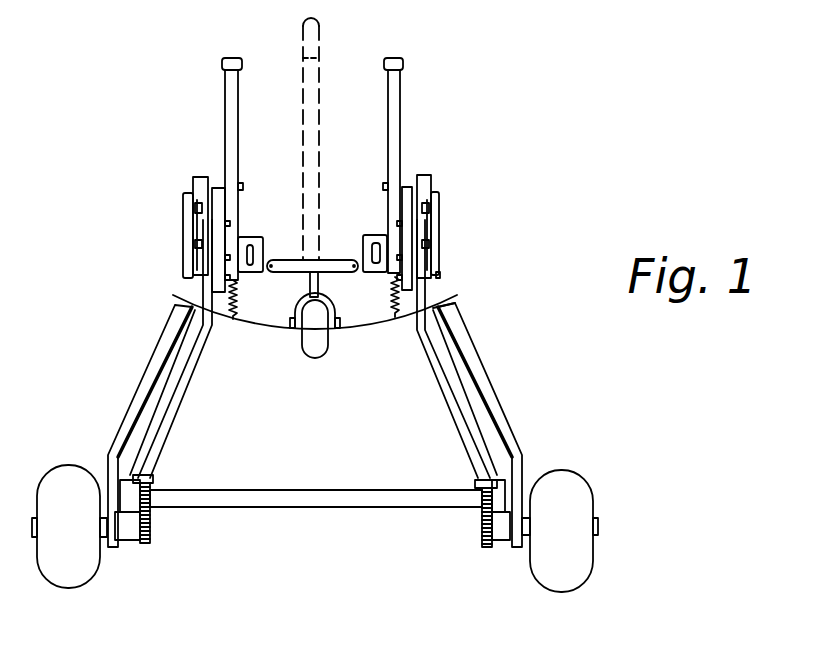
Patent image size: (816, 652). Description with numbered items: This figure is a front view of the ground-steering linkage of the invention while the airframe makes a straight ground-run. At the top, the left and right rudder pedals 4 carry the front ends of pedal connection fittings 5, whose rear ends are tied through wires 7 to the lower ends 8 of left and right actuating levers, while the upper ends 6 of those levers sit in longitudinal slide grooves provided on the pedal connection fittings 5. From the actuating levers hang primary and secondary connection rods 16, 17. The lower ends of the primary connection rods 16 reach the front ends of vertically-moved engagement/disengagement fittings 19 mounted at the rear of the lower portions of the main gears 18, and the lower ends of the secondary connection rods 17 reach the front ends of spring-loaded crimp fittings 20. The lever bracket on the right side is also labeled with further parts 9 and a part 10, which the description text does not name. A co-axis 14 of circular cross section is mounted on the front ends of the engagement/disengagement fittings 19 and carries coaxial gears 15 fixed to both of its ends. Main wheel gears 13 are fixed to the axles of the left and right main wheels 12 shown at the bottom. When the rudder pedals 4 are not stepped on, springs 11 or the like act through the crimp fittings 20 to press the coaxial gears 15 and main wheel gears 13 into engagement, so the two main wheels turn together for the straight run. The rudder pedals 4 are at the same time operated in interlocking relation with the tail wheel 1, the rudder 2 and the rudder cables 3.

The tail wheel 1 is at (320, 340).
The rudder 2 is at (313, 137).
The rudder cables 3 is at (360, 272).
The rudder pedals 4 is at (367, 260).
The pedal connection fittings 5 is at (412, 200).
The upper ends of actuating levers 6 is at (440, 183).
The wires 7 is at (442, 217).
The lower ends of actuating levers 8 is at (427, 278).
The bolt 9 is at (442, 202).
The fastener 10 is at (440, 277).
The springs 11 is at (235, 320).
The main wheels 12 is at (80, 563).
The main wheel gears 13 is at (152, 538).
The co-axis 14 is at (357, 507).
The coaxial gears 15 is at (153, 490).
The primary connection rods 16 is at (177, 393).
The secondary connection rods 17 is at (163, 440).
The main gears 18 is at (503, 437).
The engagement/disengagement fittings 19 is at (503, 492).
The crimp fittings 20 is at (473, 523).